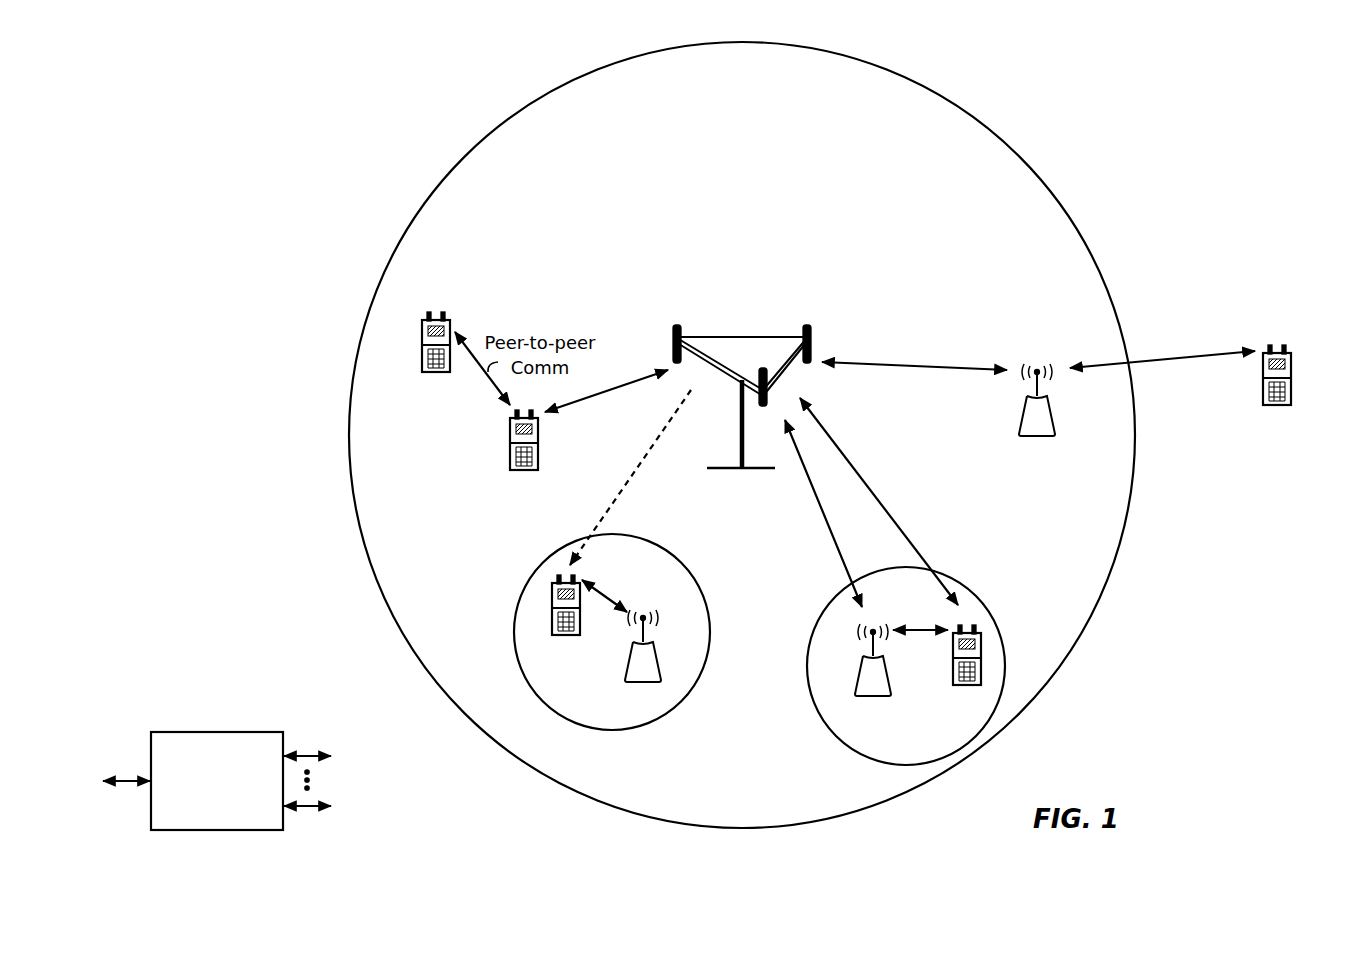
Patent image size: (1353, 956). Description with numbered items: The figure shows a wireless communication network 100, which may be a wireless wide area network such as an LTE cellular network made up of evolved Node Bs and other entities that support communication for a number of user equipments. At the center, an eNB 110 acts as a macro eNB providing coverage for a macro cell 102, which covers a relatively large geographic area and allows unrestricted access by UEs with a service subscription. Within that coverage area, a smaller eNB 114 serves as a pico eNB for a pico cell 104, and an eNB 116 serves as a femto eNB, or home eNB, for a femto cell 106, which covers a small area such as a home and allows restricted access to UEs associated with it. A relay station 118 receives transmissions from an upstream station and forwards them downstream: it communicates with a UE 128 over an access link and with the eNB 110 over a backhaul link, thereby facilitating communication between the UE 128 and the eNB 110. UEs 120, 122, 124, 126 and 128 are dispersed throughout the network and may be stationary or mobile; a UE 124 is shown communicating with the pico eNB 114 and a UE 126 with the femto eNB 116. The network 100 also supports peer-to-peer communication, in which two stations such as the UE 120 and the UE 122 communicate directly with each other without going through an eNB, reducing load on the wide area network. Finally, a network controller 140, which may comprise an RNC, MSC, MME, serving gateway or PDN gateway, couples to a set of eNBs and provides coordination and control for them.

The wireless communication network 100 is at (340, 103).
The macro cell 102 is at (1002, 141).
The pico cell 104 is at (686, 565).
The femto cell 106 is at (982, 598).
The eNB 110 is at (737, 336).
The eNB 114 is at (658, 667).
The eNB 116 is at (858, 680).
The relay station 118 is at (1051, 424).
The UE 120 is at (510, 437).
The UE 122 is at (422, 327).
The UE 124 is at (552, 630).
The UE 126 is at (955, 680).
The UE 128 is at (1291, 361).
The network controller 140 is at (214, 732).